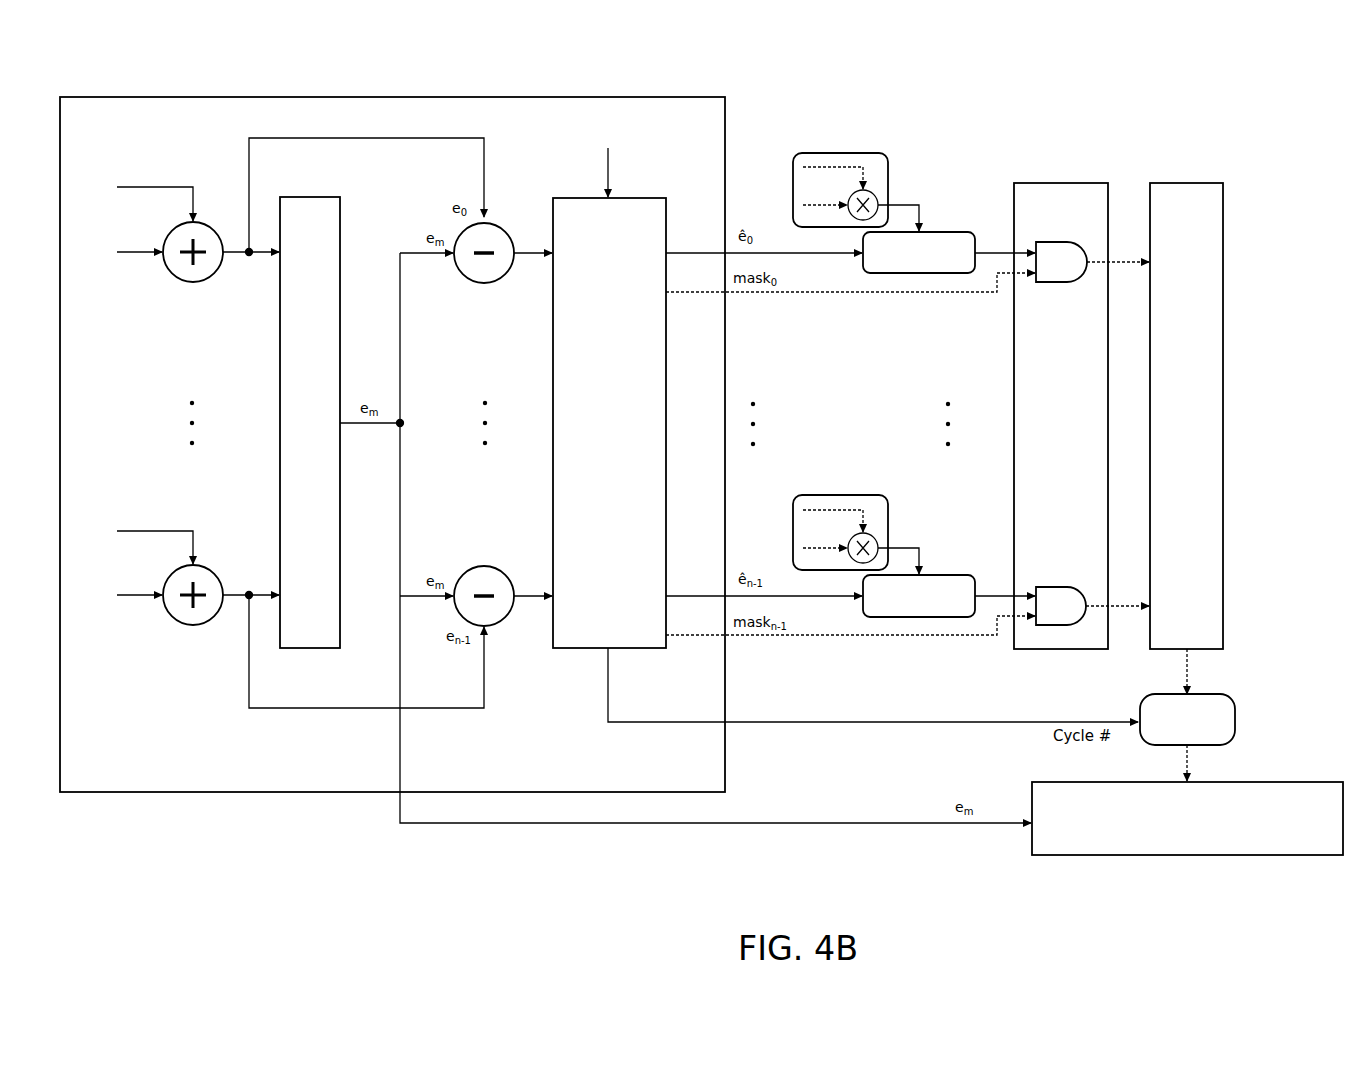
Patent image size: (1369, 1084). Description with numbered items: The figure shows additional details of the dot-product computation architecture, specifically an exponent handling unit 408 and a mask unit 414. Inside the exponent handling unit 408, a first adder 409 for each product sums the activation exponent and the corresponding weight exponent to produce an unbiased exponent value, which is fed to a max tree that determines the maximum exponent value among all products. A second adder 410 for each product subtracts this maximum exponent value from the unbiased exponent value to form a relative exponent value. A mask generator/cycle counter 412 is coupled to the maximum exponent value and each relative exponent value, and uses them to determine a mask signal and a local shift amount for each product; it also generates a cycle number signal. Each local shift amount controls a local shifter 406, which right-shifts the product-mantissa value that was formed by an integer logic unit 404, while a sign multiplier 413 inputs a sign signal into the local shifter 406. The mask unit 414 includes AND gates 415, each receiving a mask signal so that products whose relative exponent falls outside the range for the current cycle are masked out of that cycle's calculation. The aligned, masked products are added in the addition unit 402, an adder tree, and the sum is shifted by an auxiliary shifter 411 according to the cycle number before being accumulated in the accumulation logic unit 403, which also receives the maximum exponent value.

The addition unit 402 is at (1224, 550).
The accumulation logic unit 403 is at (1230, 858).
The integer logic unit 404 is at (310, 650).
The local shifter 406 is at (950, 231).
The exponent handling unit 408 is at (249, 96).
The first adder 409 is at (197, 283).
The second adder 410 is at (500, 283).
The auxiliary shifter 411 is at (1237, 718).
The mask generator/cycle counter 412 is at (650, 650).
The sign multiplier 413 is at (848, 153).
The mask unit 414 is at (1065, 652).
The AND gate 415 is at (1062, 242).